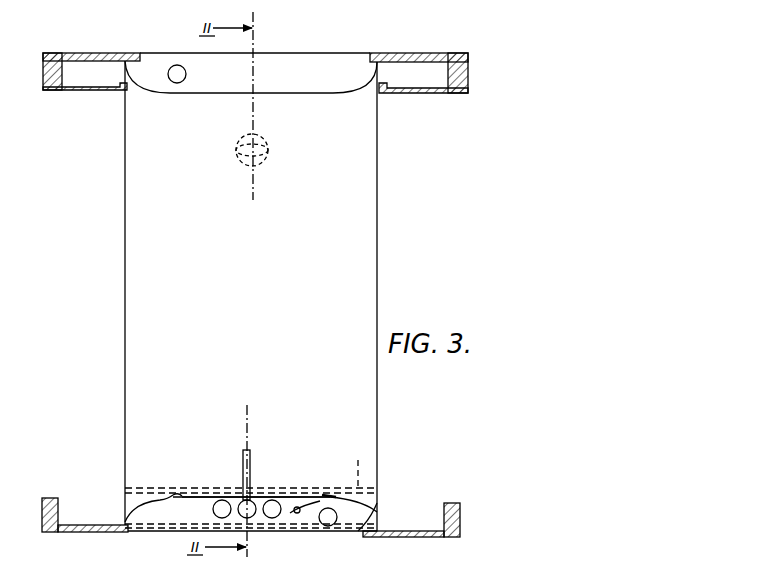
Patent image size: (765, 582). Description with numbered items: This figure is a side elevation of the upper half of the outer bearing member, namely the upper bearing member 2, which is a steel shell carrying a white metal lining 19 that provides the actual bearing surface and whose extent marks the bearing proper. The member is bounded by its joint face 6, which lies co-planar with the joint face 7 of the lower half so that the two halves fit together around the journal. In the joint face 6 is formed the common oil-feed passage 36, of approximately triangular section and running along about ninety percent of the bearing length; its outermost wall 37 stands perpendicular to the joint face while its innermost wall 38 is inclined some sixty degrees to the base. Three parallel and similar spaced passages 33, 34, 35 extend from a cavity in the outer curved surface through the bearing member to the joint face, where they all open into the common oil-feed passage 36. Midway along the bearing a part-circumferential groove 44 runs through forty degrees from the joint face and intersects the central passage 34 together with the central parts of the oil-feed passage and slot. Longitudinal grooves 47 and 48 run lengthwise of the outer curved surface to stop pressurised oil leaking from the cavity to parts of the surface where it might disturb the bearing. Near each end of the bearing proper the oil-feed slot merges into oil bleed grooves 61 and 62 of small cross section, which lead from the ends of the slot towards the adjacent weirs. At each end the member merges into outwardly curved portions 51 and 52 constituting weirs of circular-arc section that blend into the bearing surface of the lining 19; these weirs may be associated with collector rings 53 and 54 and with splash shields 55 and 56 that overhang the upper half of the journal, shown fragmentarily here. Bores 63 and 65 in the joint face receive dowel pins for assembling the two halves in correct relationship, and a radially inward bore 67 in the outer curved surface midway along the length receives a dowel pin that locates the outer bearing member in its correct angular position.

The upper bearing member 2 is at (193, 281).
The joint face 6 is at (157, 512).
The joint face 7 is at (196, 68).
The lining 19 is at (285, 95).
The passage 33 is at (223, 500).
The central passage 34 is at (256, 503).
The passage 35 is at (281, 502).
The common oil-feed passage 36 is at (190, 512).
The outermost wall 37 is at (290, 514).
The innermost wall 38 is at (308, 495).
The groove 44 is at (250, 458).
The longitudinal groove 47 is at (358, 466).
The longitudinal groove 48 is at (202, 517).
The outwardly curved portion 51 is at (362, 78).
The outwardly curved portion 52 is at (143, 78).
The collector ring 53 is at (452, 70).
The collector ring 54 is at (52, 62).
The splash shield 55 is at (428, 92).
The splash shield 56 is at (77, 91).
The oil bleed groove 61 is at (178, 495).
The oil bleed groove 62 is at (330, 492).
The bore 63 is at (177, 83).
The bore 65 is at (329, 526).
The bore 67 is at (268, 158).